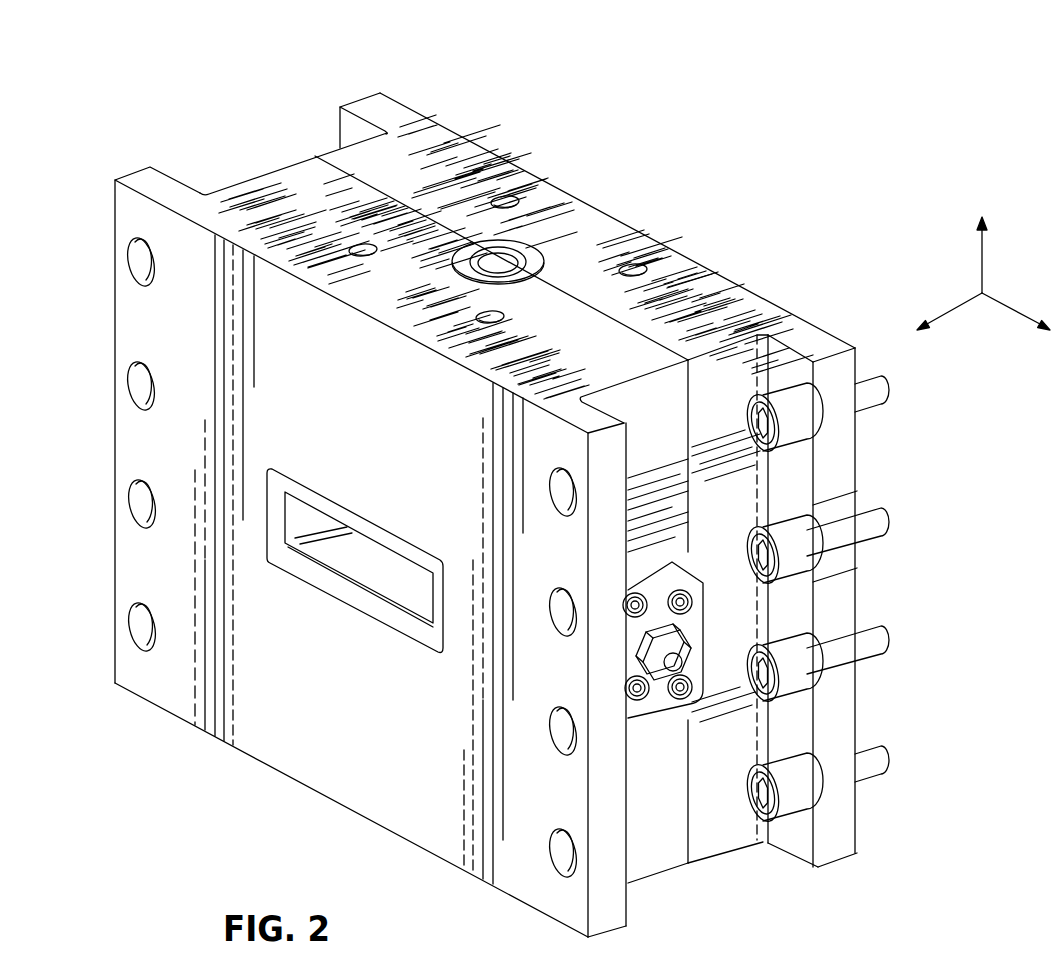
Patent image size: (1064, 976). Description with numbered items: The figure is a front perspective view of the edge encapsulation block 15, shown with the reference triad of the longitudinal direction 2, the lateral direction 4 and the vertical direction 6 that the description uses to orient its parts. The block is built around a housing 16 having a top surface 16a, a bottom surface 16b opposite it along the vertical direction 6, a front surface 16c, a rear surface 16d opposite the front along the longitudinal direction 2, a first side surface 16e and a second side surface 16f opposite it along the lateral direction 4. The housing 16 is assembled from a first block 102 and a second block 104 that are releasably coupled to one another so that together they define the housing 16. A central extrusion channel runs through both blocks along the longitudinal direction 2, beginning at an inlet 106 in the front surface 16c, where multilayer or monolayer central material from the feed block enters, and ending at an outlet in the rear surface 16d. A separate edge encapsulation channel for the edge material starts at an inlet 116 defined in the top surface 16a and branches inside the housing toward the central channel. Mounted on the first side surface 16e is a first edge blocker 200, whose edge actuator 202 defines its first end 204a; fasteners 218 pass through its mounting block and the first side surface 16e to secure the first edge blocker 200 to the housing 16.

The edge encapsulation block 15 is at (180, 92).
The housing 16 is at (128, 175).
The top surface 16a is at (325, 229).
The bottom surface 16b is at (262, 760).
The front surface 16c is at (396, 441).
The rear surface 16d is at (683, 252).
The first side surface 16e is at (735, 428).
The second side surface 16f is at (303, 160).
The first block 102 is at (147, 303).
The second block 104 is at (453, 150).
The inlet 106 is at (340, 555).
The inlet 116 is at (507, 263).
The first edge blocker 200 is at (657, 597).
The edge actuator 202 is at (680, 637).
The first end 204a is at (673, 671).
The fasteners 218 is at (645, 700).
The longitudinal direction 2 is at (949, 320).
The lateral direction 4 is at (1016, 320).
The vertical direction 6 is at (989, 255).